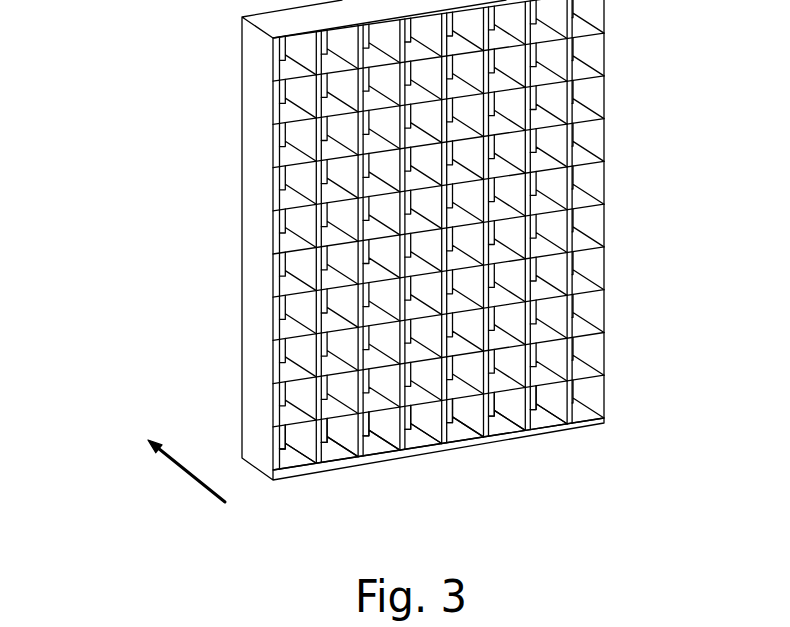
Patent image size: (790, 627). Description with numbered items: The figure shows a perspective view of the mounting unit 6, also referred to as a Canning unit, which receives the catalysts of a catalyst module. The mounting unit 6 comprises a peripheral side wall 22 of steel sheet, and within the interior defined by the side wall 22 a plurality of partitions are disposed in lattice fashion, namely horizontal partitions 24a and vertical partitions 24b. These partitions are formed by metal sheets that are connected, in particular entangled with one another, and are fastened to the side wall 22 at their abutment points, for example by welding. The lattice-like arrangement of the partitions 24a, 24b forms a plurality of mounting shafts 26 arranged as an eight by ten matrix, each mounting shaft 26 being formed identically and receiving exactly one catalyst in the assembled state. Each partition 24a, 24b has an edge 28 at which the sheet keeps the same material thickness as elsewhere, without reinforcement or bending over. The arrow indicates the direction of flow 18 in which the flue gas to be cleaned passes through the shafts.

The mounting unit 6 is at (118, 48).
The direction of flow 18 is at (186, 473).
The peripheral side wall 22 is at (251, 143).
The horizontal partitions 24a is at (587, 209).
The vertical partitions 24b is at (515, 437).
The mounting shafts 26 is at (306, 278).
The edge 28 is at (589, 285).